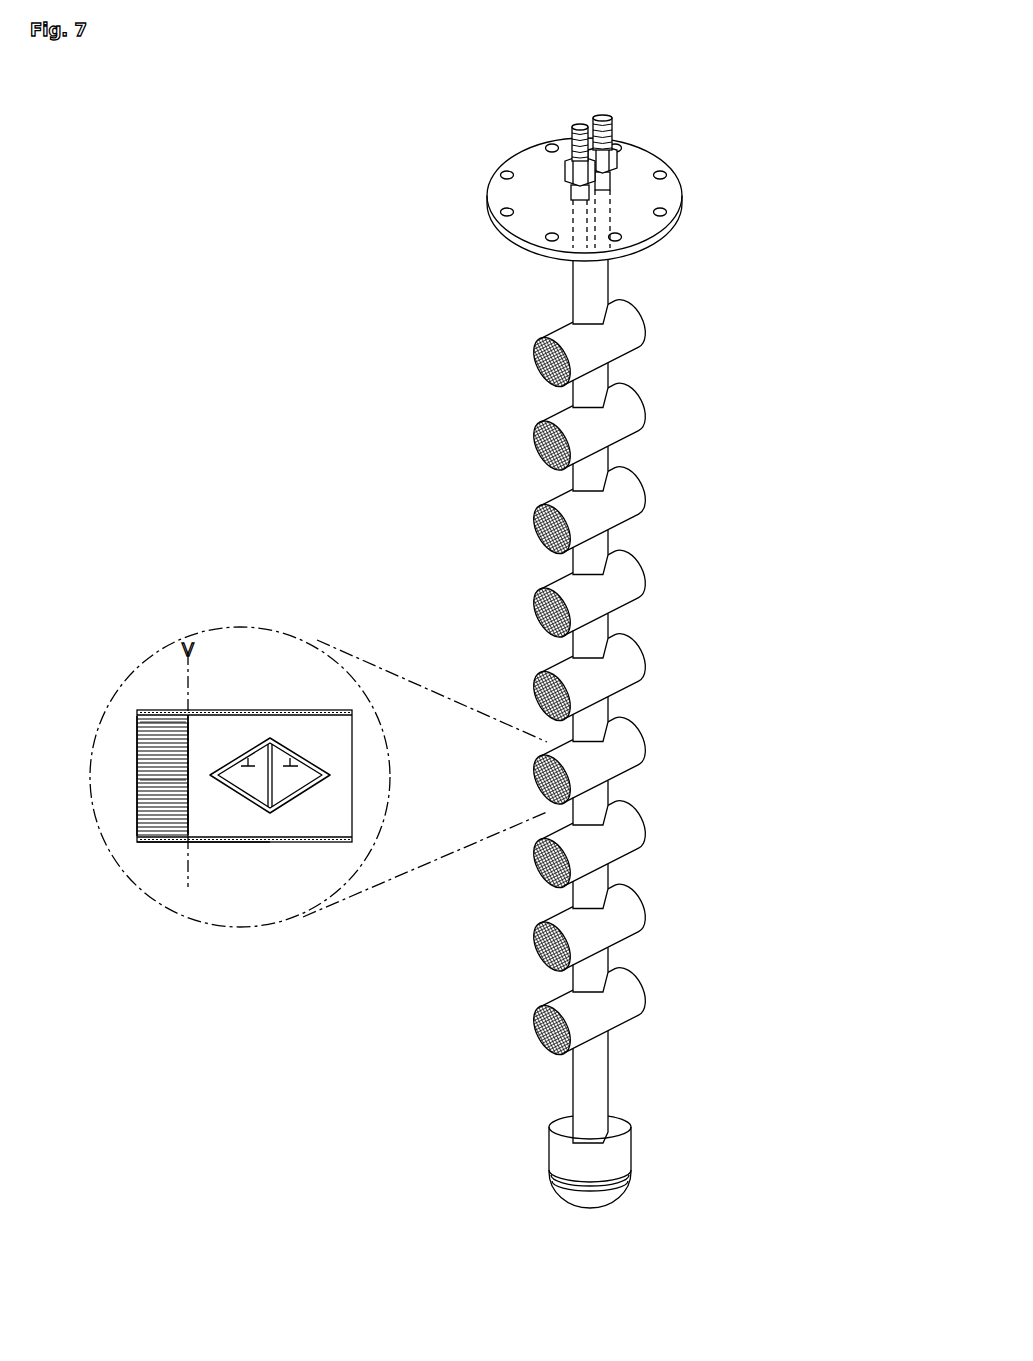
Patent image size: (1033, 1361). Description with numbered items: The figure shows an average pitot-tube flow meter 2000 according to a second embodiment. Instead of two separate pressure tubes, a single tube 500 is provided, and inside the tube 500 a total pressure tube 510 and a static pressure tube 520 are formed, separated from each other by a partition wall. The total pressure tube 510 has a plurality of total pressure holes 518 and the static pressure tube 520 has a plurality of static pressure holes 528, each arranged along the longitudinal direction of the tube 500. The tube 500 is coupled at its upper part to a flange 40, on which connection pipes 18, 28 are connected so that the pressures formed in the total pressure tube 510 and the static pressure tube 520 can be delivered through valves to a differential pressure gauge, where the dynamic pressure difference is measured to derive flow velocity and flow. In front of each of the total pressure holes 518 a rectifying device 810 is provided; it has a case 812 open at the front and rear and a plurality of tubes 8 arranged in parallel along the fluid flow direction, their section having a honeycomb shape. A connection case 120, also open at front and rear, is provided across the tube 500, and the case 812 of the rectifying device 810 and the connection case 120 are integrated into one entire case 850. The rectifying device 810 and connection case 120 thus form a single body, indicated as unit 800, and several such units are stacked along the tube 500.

The average pitot-tube flow meter 2000 is at (346, 202).
The connection pipe 18 is at (579, 126).
The connection pipe 28 is at (602, 116).
The flange 40 is at (668, 188).
The tube 500 is at (608, 281).
The rectifying device and connection case body 800 is at (614, 352).
The rectifying device 810 is at (544, 354).
The tubes 8 is at (136, 788).
The total pressure tube 510 is at (248, 759).
The static pressure tube 520 is at (290, 759).
The static pressure holes 528 is at (322, 780).
The total pressure holes 518 is at (227, 779).
The case 812 is at (165, 842).
The connection case 120 is at (270, 842).
The entire case 850 is at (265, 980).